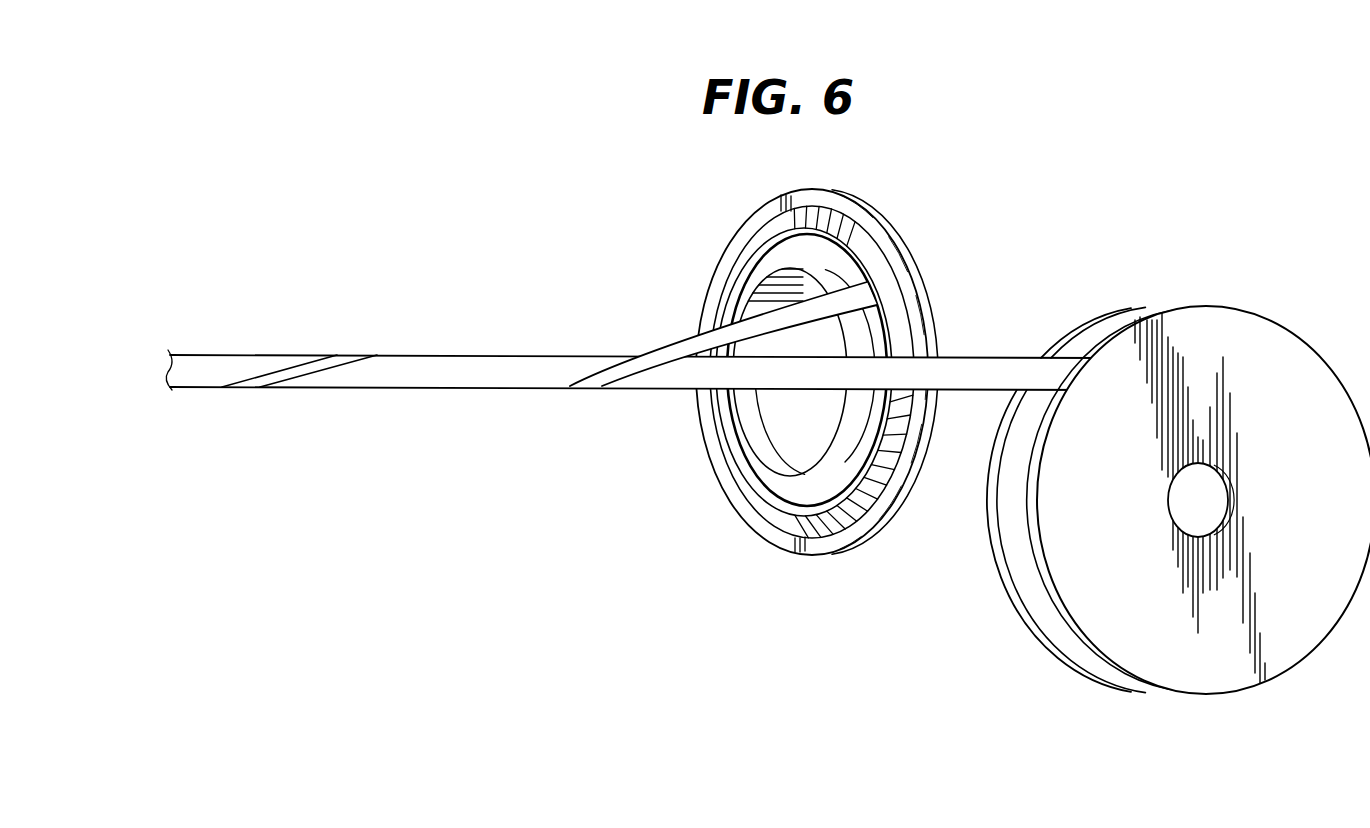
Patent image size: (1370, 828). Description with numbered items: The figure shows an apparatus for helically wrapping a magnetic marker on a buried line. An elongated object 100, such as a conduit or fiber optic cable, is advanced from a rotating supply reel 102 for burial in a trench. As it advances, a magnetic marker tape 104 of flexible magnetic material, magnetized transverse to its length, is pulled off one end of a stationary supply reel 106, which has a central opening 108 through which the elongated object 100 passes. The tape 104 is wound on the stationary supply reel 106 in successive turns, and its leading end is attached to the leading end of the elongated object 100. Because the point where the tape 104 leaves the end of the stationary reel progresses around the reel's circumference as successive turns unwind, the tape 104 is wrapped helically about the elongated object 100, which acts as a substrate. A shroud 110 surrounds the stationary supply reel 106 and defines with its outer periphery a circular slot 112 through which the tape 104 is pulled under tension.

The elongated object 100 is at (521, 353).
The rotating supply reel 102 is at (1207, 306).
The magnetic marker tape 104 is at (688, 343).
The stationary supply reel 106 is at (728, 290).
The central opening 108 is at (777, 420).
The shroud 110 is at (885, 221).
The circular slot 112 is at (745, 500).